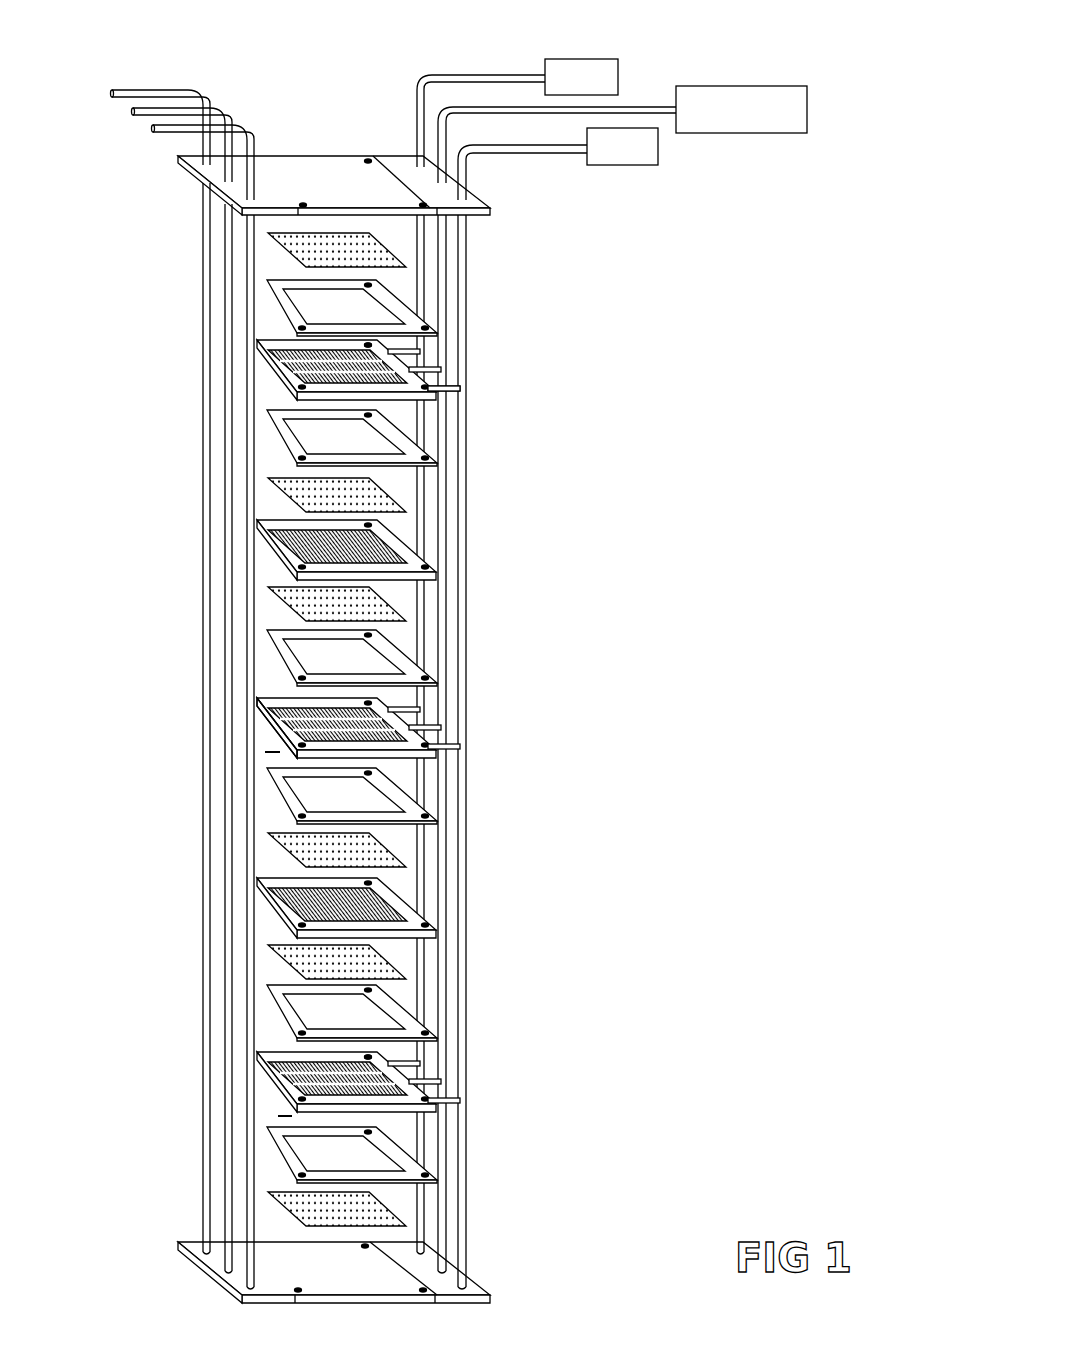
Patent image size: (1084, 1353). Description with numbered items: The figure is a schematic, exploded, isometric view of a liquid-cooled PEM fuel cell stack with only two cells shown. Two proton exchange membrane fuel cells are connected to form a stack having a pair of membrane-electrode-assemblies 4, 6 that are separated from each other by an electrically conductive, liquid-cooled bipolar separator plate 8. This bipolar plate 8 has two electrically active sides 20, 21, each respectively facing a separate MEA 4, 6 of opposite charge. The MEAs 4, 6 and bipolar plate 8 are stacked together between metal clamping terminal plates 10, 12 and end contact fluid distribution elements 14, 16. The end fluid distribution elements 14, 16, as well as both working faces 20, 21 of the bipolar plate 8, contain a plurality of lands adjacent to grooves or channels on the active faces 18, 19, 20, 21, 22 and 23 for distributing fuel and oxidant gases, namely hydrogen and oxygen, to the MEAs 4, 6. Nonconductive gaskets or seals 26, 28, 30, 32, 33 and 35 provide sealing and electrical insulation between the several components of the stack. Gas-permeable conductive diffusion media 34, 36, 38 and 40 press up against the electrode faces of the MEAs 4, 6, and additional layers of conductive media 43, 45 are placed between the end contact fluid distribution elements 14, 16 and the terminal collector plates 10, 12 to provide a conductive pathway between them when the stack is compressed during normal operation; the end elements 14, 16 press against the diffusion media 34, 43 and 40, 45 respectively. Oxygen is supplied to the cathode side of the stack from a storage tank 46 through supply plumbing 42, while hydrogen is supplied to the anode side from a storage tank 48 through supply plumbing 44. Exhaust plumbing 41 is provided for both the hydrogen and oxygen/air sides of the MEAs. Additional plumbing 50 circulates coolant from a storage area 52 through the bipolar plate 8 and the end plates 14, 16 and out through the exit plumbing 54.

The membrane-electrode-assembly 4 is at (254, 553).
The membrane-electrode-assembly 6 is at (424, 893).
The bipolar separator plate 8 is at (254, 735).
The terminal plate 10 is at (360, 195).
The terminal plate 12 is at (380, 1295).
The end contact fluid distribution element 14 is at (252, 376).
The end contact fluid distribution element 16 is at (258, 1099).
The active face 18 is at (382, 355).
The active face 19 is at (398, 405).
The electrically active side 20 is at (268, 698).
The electrically active side 21 is at (272, 756).
The active face 22 is at (391, 1082).
The active face 23 is at (285, 1116).
The gasket 26 is at (255, 437).
The gasket 28 is at (255, 660).
The gasket 30 is at (413, 796).
The gasket 32 is at (268, 1010).
The gasket 33 is at (395, 1140).
The diffusion media 34 is at (258, 492).
The gasket 35 is at (251, 305).
The diffusion media 36 is at (258, 601).
The diffusion media 38 is at (282, 857).
The diffusion media 40 is at (280, 962).
The exhaust plumbing 41 is at (168, 90).
The supply plumbing 42 is at (420, 108).
The conductive media 43 is at (282, 235).
The supply plumbing 44 is at (463, 170).
The conductive media 45 is at (272, 1213).
The storage tank 46 is at (605, 66).
The storage tank 48 is at (652, 164).
The coolant plumbing 50 is at (637, 110).
The coolant storage area 52 is at (720, 92).
The exit plumbing 54 is at (212, 112).